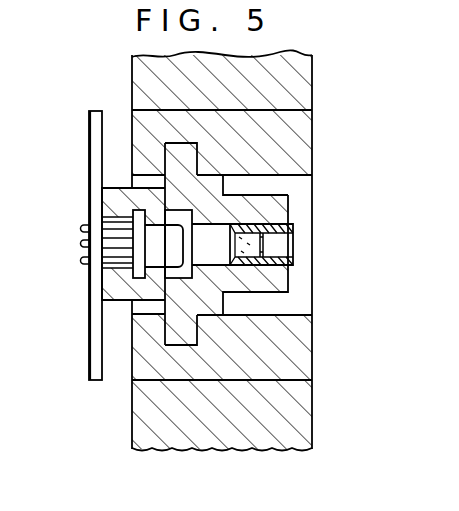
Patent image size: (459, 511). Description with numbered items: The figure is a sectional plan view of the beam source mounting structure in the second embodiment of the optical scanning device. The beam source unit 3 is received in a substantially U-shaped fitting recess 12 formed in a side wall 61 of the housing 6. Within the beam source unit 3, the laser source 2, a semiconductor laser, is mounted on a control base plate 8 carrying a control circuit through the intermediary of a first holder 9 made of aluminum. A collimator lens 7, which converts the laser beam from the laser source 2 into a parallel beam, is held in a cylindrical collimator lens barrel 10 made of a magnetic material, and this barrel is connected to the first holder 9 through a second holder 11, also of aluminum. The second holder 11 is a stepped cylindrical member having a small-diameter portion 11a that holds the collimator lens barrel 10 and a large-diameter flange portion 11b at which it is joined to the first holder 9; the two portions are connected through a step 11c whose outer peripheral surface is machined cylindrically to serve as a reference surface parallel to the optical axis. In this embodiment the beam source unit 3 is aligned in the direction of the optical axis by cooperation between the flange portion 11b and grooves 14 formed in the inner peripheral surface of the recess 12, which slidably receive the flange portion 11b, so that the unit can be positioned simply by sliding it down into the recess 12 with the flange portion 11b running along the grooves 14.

The laser source 2 is at (162, 262).
The beam source unit 3 is at (81, 193).
The housing 6 is at (313, 70).
The collimator lens 7 is at (260, 252).
The control base plate 8 is at (90, 346).
The first holder 9 is at (108, 214).
The collimator lens barrel 10 is at (293, 226).
The second holder 11 is at (292, 283).
The small-diameter portion 11a is at (265, 282).
The flange portion 11b is at (313, 146).
The step 11c is at (210, 307).
The fitting recess 12 is at (298, 188).
The grooves 14 is at (172, 146).
The side wall 61 is at (132, 110).